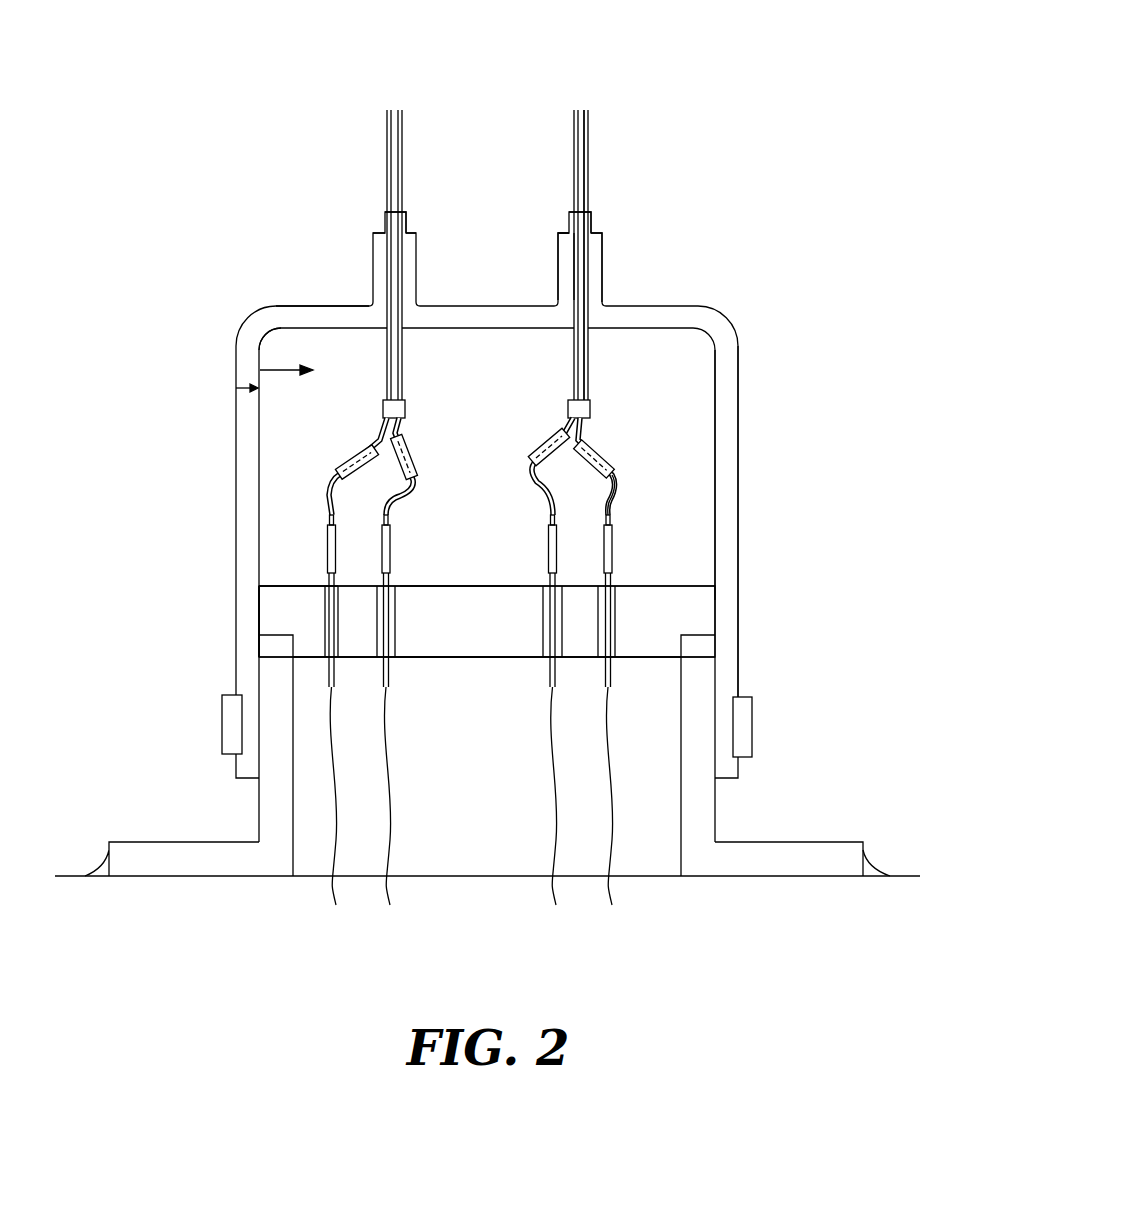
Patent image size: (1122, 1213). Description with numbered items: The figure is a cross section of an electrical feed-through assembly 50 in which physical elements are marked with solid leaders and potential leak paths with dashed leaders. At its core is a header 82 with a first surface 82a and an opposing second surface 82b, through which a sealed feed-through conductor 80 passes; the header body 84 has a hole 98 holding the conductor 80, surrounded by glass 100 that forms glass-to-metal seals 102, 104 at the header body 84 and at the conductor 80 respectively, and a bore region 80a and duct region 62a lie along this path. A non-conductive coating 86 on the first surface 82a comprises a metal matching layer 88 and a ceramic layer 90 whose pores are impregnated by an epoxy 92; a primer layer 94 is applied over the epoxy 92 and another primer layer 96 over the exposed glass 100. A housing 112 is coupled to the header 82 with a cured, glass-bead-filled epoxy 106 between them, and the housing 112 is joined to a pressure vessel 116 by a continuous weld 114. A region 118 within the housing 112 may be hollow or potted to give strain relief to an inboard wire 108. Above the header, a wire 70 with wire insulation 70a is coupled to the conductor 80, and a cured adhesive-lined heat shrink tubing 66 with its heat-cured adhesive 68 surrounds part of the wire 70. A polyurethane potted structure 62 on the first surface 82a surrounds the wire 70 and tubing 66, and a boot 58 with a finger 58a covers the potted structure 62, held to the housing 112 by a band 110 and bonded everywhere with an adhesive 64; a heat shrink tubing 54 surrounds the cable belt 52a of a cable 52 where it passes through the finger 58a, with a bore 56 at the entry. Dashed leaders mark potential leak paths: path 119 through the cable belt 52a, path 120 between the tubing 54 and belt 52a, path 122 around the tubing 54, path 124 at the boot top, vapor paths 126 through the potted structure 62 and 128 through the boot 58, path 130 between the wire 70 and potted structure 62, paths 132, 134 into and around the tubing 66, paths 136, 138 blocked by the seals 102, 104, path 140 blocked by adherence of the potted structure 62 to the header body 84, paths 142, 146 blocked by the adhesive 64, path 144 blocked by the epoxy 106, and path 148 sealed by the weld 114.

The electrical feed-through assembly 50 is at (671, 75).
The cable 52 is at (588, 130).
The cable belt 52a is at (587, 160).
The cured adhesive-lined heat shrink tubing 54 is at (591, 218).
The tube bore 56 is at (574, 266).
The boot 58 is at (720, 312).
The finger 58a is at (602, 253).
The polyurethane potted structure 62 is at (693, 364).
The cavity inner surface 62a is at (718, 388).
The adhesive 64 is at (718, 435).
The heat shrink tubing 66 is at (568, 438).
The heat-cured adhesive 68 is at (605, 452).
The wire 70 is at (616, 482).
The wire insulation 70a is at (616, 496).
The feed-through conductor 80 is at (615, 578).
The header top surface 80a is at (617, 533).
The header 82 is at (617, 600).
The first surface 82a is at (615, 593).
The second surface 82b is at (428, 660).
The header body 84 is at (519, 584).
The non-conductive coating 86 is at (495, 584).
The metal matching layer 88 is at (476, 584).
The ceramic layer 90 is at (457, 584).
The epoxy 92 is at (439, 584).
The primer layer 94 is at (422, 584).
The primer layer 96 is at (597, 584).
The hole 98 is at (557, 662).
The glass 100 is at (616, 587).
The glass-to-metal seal 102 is at (615, 590).
The glass-to-metal seal 104 is at (615, 600).
The cured epoxy 106 is at (686, 632).
The wire 108 is at (600, 798).
The band 110 is at (752, 735).
The housing 112 is at (818, 842).
The weld 114 is at (880, 862).
The pressure vessel 116 is at (750, 878).
The region 118 is at (490, 784).
The potential leak path 119 is at (388, 135).
The potential leak path 120 is at (385, 213).
The potential leak path 122 is at (378, 232).
The housing top wall 124 is at (282, 330).
The potential leak path 126 is at (262, 352).
The potential leak path 128 is at (240, 386).
The leak path 130 is at (392, 432).
The leak path 132 is at (392, 450).
The leak path 134 is at (343, 467).
The potential leak path 136 is at (330, 525).
The potential leak path 138 is at (330, 575).
The leak path 140 is at (278, 585).
The potential leak path 142 is at (259, 600).
The potential leak path 144 is at (275, 640).
The potential leak path 146 is at (256, 780).
The potential leak path 148 is at (150, 875).